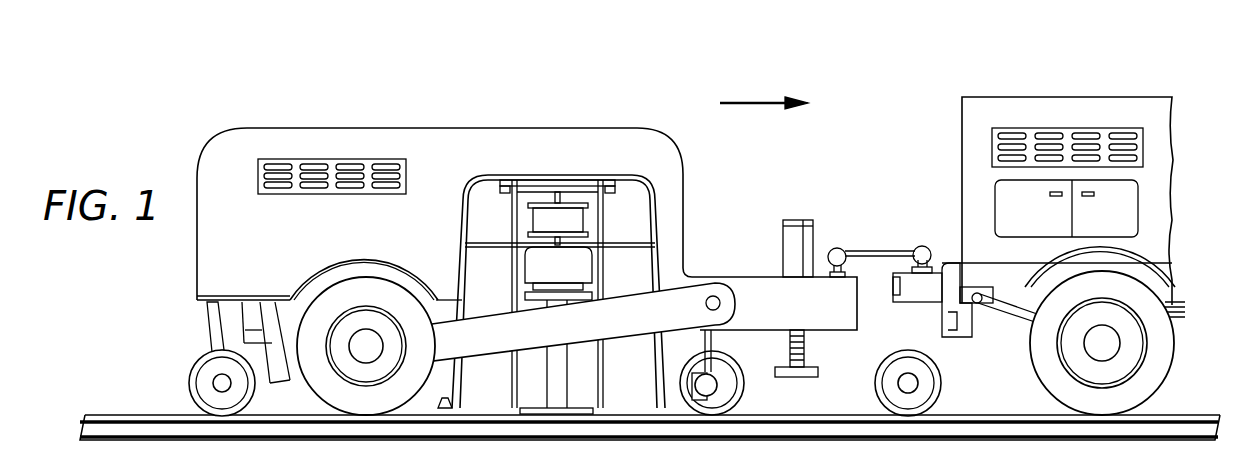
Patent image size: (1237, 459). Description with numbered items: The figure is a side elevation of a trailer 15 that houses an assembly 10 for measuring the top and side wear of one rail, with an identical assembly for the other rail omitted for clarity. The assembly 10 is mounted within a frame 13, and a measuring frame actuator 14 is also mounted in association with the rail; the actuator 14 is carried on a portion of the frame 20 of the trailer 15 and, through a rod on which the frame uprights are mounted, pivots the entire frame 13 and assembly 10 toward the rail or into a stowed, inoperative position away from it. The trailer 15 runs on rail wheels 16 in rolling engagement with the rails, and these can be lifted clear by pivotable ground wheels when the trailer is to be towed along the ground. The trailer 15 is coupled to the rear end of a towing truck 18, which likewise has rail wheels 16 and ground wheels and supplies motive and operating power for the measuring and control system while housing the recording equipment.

The assembly 10 is at (613, 270).
The frame 13 is at (612, 356).
The measuring frame actuator 14 is at (613, 217).
The trailer 15 is at (441, 98).
The rail wheels 16 is at (190, 376).
The towing vehicle or truck 18 is at (1024, 80).
The frame of trailer 20 is at (463, 179).